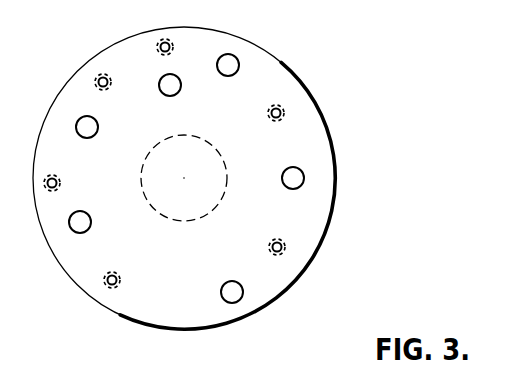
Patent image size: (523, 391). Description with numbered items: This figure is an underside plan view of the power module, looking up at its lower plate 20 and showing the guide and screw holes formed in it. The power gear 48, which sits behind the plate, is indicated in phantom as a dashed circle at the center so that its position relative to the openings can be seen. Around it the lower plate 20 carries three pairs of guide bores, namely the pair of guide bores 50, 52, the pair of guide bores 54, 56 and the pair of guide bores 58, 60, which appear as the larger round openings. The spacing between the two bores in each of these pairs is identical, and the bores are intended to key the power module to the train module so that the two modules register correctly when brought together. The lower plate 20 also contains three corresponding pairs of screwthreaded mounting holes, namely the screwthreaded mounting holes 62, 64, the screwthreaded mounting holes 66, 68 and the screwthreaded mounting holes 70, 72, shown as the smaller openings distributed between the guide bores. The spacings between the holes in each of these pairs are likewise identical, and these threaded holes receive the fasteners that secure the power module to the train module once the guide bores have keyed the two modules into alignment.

The lower plate 20 is at (103, 306).
The power gear 48 is at (165, 216).
The guide bore 50 is at (91, 218).
The guide bore 52 is at (238, 70).
The guide bore 54 is at (96, 133).
The guide bore 56 is at (285, 169).
The guide bore 58 is at (179, 92).
The guide bore 60 is at (229, 281).
The screwthreaded mounting hole 62 is at (57, 181).
The screwthreaded mounting hole 64 is at (281, 113).
The screwthreaded mounting hole 66 is at (107, 86).
The screwthreaded mounting hole 68 is at (281, 243).
The screwthreaded mounting hole 70 is at (170, 47).
The screwthreaded mounting hole 72 is at (120, 279).